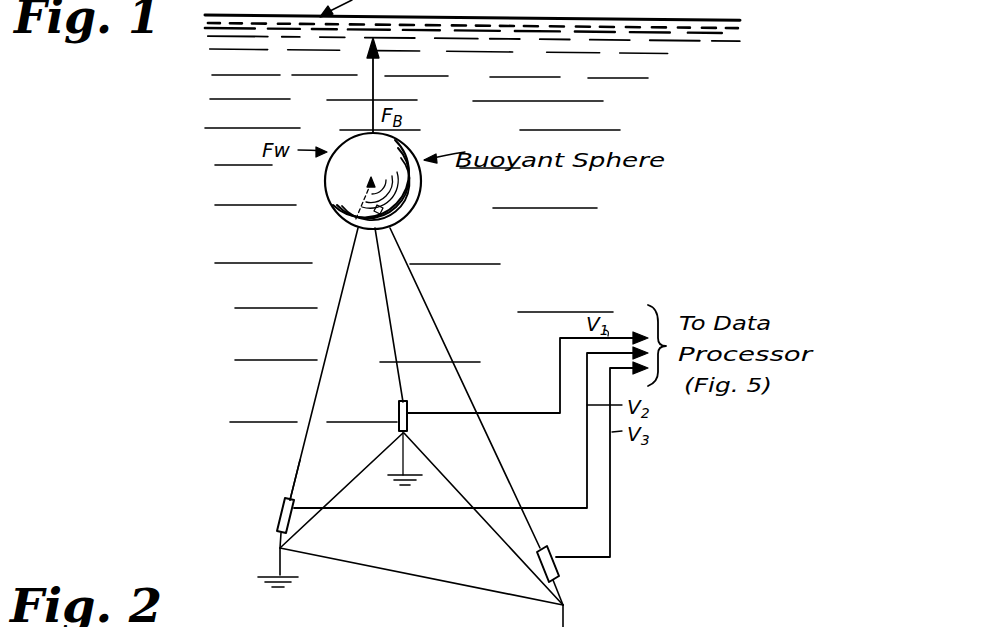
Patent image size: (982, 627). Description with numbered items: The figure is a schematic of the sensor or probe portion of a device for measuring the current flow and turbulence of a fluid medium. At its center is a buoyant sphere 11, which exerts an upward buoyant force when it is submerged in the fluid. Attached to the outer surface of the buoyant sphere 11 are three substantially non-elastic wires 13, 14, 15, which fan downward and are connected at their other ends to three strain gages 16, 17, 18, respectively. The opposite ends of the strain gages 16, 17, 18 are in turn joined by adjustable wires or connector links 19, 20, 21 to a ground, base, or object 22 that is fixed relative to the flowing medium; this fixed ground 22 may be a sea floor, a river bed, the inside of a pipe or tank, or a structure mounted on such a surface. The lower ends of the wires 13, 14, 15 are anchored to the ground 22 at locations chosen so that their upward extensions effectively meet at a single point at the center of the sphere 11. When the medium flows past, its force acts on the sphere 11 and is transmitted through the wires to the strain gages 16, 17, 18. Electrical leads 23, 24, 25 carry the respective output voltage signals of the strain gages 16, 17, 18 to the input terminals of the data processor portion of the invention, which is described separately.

The buoyant sphere 11 is at (418, 199).
The non-elastic wire 13 is at (348, 262).
The non-elastic wire 14 is at (382, 281).
The non-elastic wire 15 is at (406, 258).
The strain gage 16 is at (286, 498).
The strain gage 17 is at (397, 408).
The strain gage 18 is at (556, 552).
The adjustable wire or connector link 19 is at (278, 538).
The adjustable wire or connector link 20 is at (400, 437).
The adjustable wire or connector link 21 is at (565, 587).
The ground, base, or object 22 is at (418, 579).
The electrical lead 23 is at (355, 512).
The electrical lead 24 is at (452, 412).
The electrical lead 25 is at (585, 558).